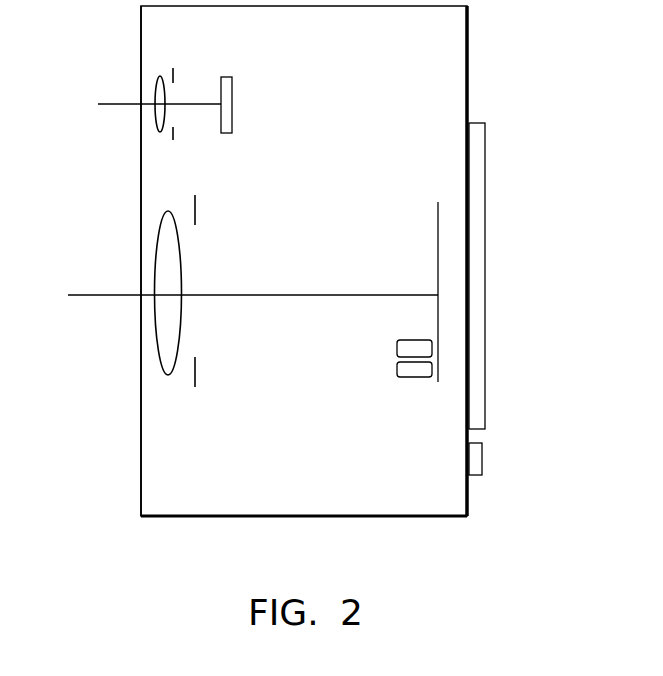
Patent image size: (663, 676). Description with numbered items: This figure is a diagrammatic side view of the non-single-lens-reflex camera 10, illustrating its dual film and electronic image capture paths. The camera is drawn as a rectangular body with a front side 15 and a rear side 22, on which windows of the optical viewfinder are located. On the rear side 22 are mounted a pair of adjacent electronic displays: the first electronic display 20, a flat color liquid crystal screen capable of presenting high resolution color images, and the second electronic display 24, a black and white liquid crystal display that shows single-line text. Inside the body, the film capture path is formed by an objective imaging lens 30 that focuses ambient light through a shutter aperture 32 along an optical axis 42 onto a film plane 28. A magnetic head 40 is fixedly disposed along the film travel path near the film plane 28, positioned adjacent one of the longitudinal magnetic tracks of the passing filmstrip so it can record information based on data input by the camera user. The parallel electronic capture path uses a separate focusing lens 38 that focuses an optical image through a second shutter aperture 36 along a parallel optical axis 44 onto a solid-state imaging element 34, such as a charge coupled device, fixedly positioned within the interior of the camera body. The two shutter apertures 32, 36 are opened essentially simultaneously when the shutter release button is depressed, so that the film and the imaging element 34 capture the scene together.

The camera 10 is at (428, 523).
The front side 15 is at (141, 480).
The first electronic display 20 is at (486, 172).
The rear side 22 is at (470, 80).
The second electronic display 24 is at (483, 461).
The film plane 28 is at (436, 230).
The objective imaging lens 30 is at (156, 225).
The shutter aperture 32 is at (195, 387).
The solid-state imaging element 34 is at (232, 97).
The shutter aperture 36 is at (175, 72).
The focusing lens 38 is at (156, 81).
The magnetic head 40 is at (415, 378).
The optical axis 42 is at (108, 297).
The parallel optical axis 44 is at (113, 105).